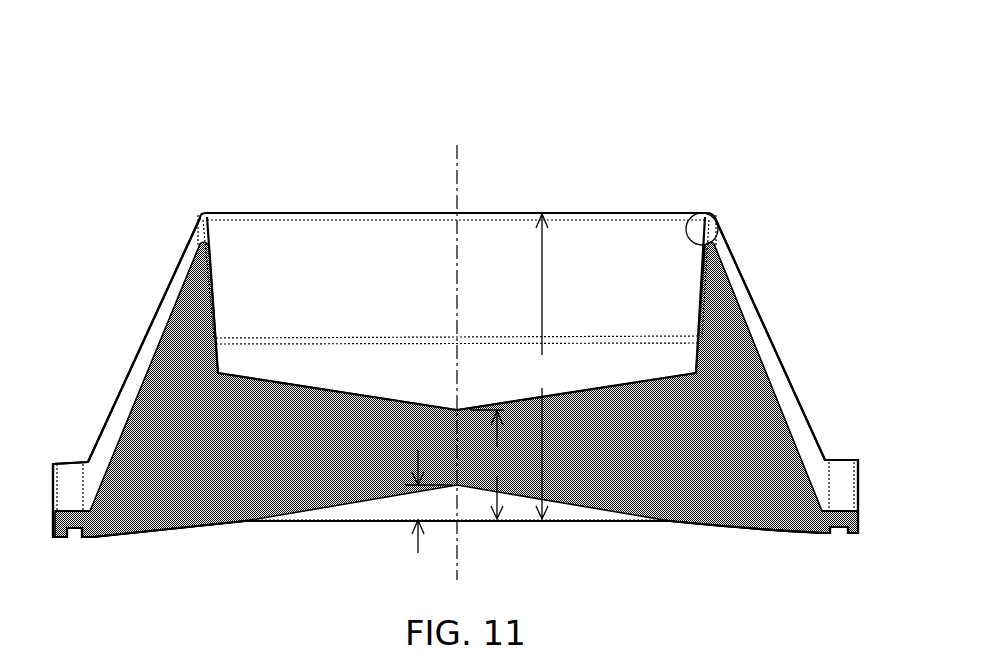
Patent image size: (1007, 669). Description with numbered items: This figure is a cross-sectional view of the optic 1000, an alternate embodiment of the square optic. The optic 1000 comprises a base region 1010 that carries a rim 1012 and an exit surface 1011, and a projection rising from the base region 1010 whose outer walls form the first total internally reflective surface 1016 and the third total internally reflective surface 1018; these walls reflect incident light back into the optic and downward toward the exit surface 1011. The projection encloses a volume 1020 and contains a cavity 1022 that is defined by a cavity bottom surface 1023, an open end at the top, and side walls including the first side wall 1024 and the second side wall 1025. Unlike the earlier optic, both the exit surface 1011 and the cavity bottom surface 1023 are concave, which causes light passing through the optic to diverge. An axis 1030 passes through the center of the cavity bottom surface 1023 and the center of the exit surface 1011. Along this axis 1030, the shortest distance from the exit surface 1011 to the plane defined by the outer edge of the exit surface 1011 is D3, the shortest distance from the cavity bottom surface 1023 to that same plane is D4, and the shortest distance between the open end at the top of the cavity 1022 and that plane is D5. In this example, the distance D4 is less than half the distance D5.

The optic 1000 is at (838, 127).
The base region 1010 is at (880, 522).
The exit surface 1011 is at (763, 532).
The rim 1012 is at (845, 472).
The first total internally reflective surface 1016 is at (757, 312).
The third total internally reflective surface 1018 is at (165, 305).
The volume 1020 is at (697, 451).
The cavity 1022 is at (236, 204).
The cavity bottom surface 1023 is at (304, 383).
The first side wall 1024 is at (704, 212).
The second side wall 1025 is at (626, 287).
The axis 1030 is at (466, 162).
The distance D3 is at (426, 517).
The distance D4 is at (492, 464).
The distance D5 is at (544, 366).